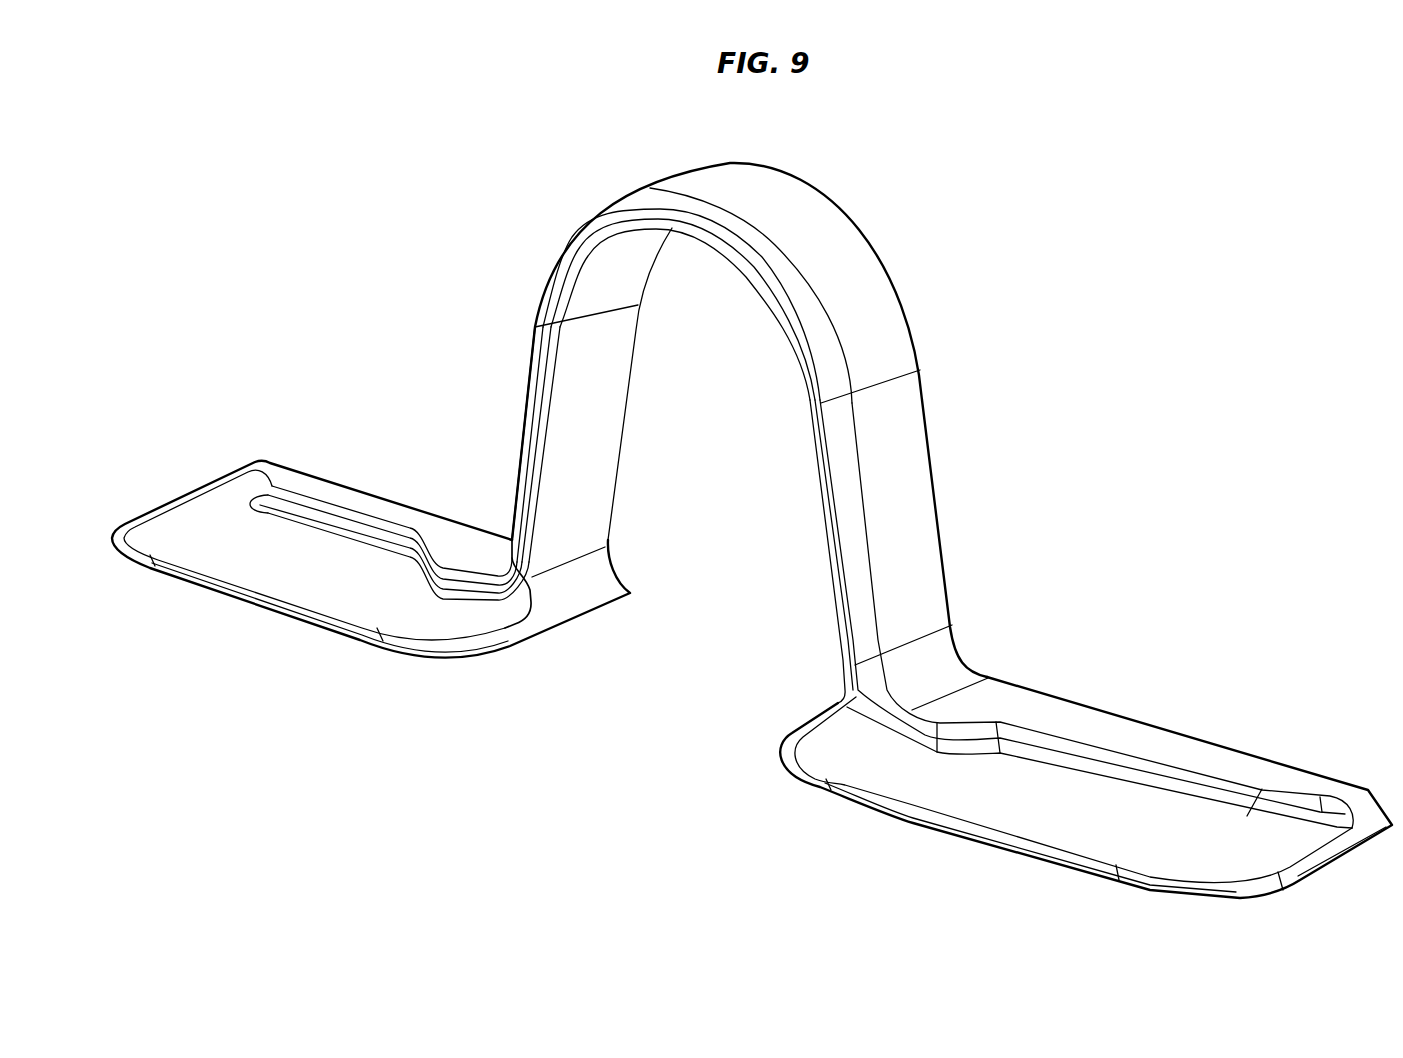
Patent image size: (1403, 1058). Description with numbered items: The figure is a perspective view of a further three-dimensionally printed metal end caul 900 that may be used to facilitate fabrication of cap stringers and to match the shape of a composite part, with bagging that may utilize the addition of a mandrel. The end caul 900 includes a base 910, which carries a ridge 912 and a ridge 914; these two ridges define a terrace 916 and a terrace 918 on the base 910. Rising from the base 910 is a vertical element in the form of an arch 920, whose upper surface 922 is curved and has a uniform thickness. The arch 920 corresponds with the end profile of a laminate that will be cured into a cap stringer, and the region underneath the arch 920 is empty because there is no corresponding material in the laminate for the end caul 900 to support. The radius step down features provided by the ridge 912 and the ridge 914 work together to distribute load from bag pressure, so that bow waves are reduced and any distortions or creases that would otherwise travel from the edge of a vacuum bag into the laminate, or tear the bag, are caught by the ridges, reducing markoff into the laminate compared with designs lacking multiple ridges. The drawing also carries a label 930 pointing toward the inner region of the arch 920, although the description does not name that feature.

The end caul 900 is at (445, 750).
The base 910 is at (1155, 690).
The ridge 912 is at (306, 498).
The ridge 914 is at (168, 558).
The terrace 916 is at (400, 512).
The terrace 918 is at (273, 583).
The arch 920 is at (952, 272).
The upper surface 922 is at (833, 190).
The inner surface 930 is at (695, 487).